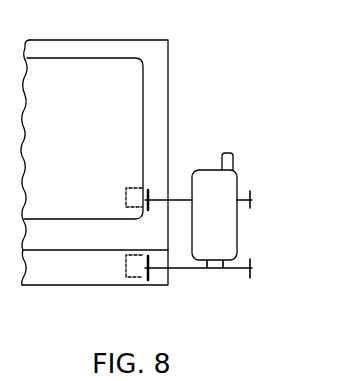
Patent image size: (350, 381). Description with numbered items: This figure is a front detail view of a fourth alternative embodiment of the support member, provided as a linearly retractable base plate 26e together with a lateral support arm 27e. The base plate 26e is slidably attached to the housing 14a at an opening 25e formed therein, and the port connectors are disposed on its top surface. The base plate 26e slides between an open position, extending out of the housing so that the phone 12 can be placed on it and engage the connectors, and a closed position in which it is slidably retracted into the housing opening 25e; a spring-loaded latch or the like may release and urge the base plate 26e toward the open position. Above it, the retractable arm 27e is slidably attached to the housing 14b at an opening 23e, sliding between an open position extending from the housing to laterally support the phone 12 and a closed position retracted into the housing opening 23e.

The housing 14b is at (60, 40).
The housing 14a is at (103, 285).
The housing opening 23e is at (146, 205).
The housing opening 25e is at (135, 285).
The phone 12 is at (237, 171).
The retractable arm 27e is at (258, 198).
The base plate 26e is at (260, 267).